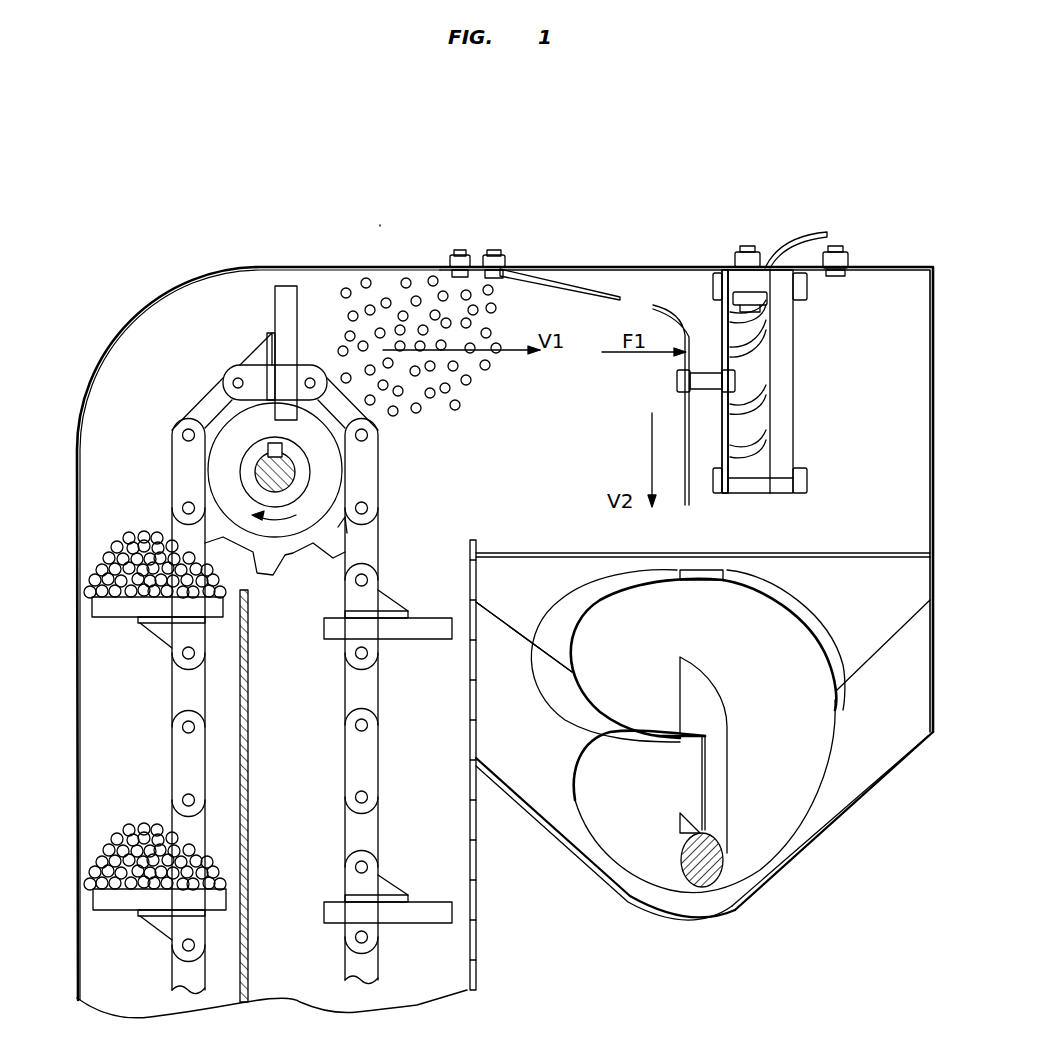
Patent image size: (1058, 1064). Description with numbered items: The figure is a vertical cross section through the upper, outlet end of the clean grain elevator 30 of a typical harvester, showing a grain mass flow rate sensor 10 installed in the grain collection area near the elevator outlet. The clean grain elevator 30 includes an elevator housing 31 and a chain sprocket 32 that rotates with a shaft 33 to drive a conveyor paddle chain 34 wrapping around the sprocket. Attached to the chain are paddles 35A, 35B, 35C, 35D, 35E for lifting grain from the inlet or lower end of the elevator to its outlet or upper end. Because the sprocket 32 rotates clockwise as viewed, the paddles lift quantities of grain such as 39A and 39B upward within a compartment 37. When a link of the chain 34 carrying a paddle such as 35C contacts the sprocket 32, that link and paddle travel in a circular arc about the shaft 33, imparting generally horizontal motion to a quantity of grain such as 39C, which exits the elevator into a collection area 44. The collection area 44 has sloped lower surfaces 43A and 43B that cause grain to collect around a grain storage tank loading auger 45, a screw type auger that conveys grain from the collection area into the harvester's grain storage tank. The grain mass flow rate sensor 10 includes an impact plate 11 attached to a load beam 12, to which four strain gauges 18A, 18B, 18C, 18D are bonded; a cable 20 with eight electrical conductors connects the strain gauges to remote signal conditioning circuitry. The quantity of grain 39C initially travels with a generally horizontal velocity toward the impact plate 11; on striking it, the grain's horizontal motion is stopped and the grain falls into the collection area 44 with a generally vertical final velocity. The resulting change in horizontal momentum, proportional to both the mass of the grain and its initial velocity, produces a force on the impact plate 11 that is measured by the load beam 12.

The grain mass flow rate sensor 10 is at (842, 381).
The impact plate 11 is at (663, 305).
The load beam 12 is at (722, 326).
The strain gauge 18A is at (728, 316).
The strain gauge 18B is at (728, 353).
The strain gauge 18C is at (728, 408).
The strain gauge 18D is at (728, 458).
The cable 20 is at (830, 230).
The clean grain elevator 30 is at (385, 221).
The elevator housing 31 is at (103, 362).
The chain sprocket 32 is at (293, 556).
The shaft 33 is at (295, 477).
The conveyor paddle chain 34 is at (380, 543).
The paddle 35A is at (117, 910).
The paddle 35B is at (123, 620).
The paddle 35C is at (275, 333).
The paddle 35D is at (398, 640).
The paddle 35E is at (410, 925).
The compartment 37 is at (142, 750).
The quantity of grain 39A is at (115, 821).
The quantity of grain 39B is at (113, 533).
The quantity of grain 39C is at (473, 406).
The sloped lower surface 43A is at (518, 798).
The sloped lower surface 43B is at (893, 765).
The collection area 44 is at (538, 604).
The grain storage tank loading auger 45 is at (807, 638).